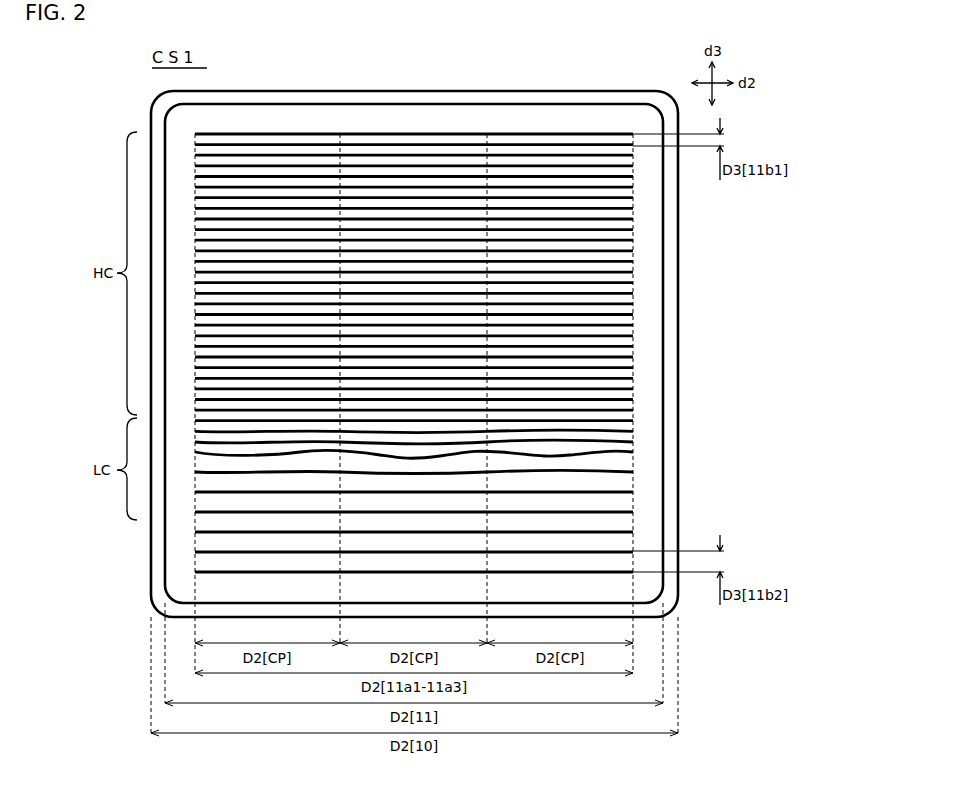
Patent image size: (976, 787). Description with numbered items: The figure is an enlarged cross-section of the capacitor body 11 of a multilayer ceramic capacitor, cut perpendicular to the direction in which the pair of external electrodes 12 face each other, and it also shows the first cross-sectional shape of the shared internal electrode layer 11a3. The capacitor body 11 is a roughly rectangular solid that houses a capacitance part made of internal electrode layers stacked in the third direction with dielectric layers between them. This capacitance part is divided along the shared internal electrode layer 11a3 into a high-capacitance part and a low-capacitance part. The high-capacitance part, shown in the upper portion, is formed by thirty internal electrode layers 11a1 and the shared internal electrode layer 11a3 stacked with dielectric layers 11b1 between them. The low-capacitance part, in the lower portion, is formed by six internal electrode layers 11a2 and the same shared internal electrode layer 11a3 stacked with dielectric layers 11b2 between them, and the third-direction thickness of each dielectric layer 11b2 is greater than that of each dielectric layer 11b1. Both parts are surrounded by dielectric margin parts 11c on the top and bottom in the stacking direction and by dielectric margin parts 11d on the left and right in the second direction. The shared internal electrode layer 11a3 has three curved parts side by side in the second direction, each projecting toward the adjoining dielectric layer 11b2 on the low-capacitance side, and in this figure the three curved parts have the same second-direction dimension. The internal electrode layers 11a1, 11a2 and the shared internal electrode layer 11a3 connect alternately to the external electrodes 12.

The external electrode 12 is at (345, 91).
The capacitor body 11 is at (410, 104).
The dielectric margin part 11c is at (483, 120).
The internal electrode layer 11a1 is at (633, 194).
The dielectric layer 11b1 is at (633, 205).
The dielectric margin part 11d is at (167, 322).
The shared internal electrode layer 11a3 is at (633, 451).
The dielectric layer 11b2 is at (633, 520).
The internal electrode layer 11a2 is at (633, 535).